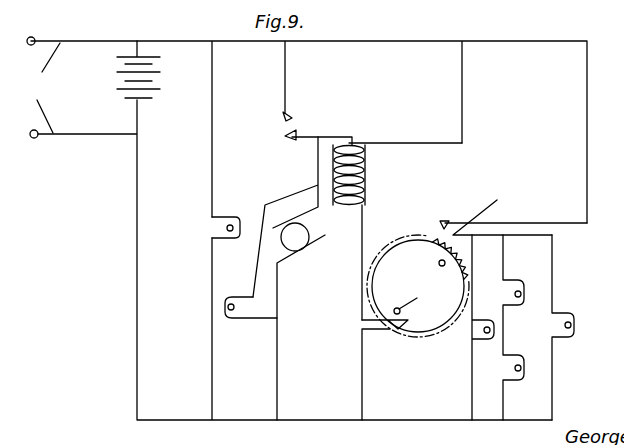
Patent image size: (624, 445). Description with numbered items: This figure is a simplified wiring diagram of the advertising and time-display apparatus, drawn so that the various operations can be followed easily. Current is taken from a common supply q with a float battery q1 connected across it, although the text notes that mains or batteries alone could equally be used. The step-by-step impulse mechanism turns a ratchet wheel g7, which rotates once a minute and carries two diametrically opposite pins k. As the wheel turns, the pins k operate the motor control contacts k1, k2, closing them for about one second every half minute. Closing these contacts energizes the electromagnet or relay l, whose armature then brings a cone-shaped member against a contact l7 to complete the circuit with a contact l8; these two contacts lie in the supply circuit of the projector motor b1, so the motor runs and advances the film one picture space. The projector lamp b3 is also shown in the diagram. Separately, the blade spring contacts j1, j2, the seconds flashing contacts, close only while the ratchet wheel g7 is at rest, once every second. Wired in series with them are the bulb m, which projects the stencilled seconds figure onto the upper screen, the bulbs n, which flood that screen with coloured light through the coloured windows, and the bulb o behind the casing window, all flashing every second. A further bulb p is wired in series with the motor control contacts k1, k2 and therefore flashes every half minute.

The common supply q is at (41, 87).
The float battery q1 is at (118, 87).
The contact l7 is at (297, 117).
The contact l8 is at (308, 152).
The projector lamp b3 is at (233, 215).
The projector motor b1 is at (288, 235).
The bulb p is at (233, 322).
The electromagnet or relay l is at (363, 172).
The motor control contact k2 is at (397, 331).
The ratchet wheel g7 is at (408, 238).
The pin k is at (441, 266).
The motor control contact k1 is at (390, 306).
The blade spring contact j1 is at (446, 225).
The blade spring contact j2 is at (502, 208).
The bulb o is at (485, 332).
The bulb n is at (532, 307).
The bulb m is at (573, 335).